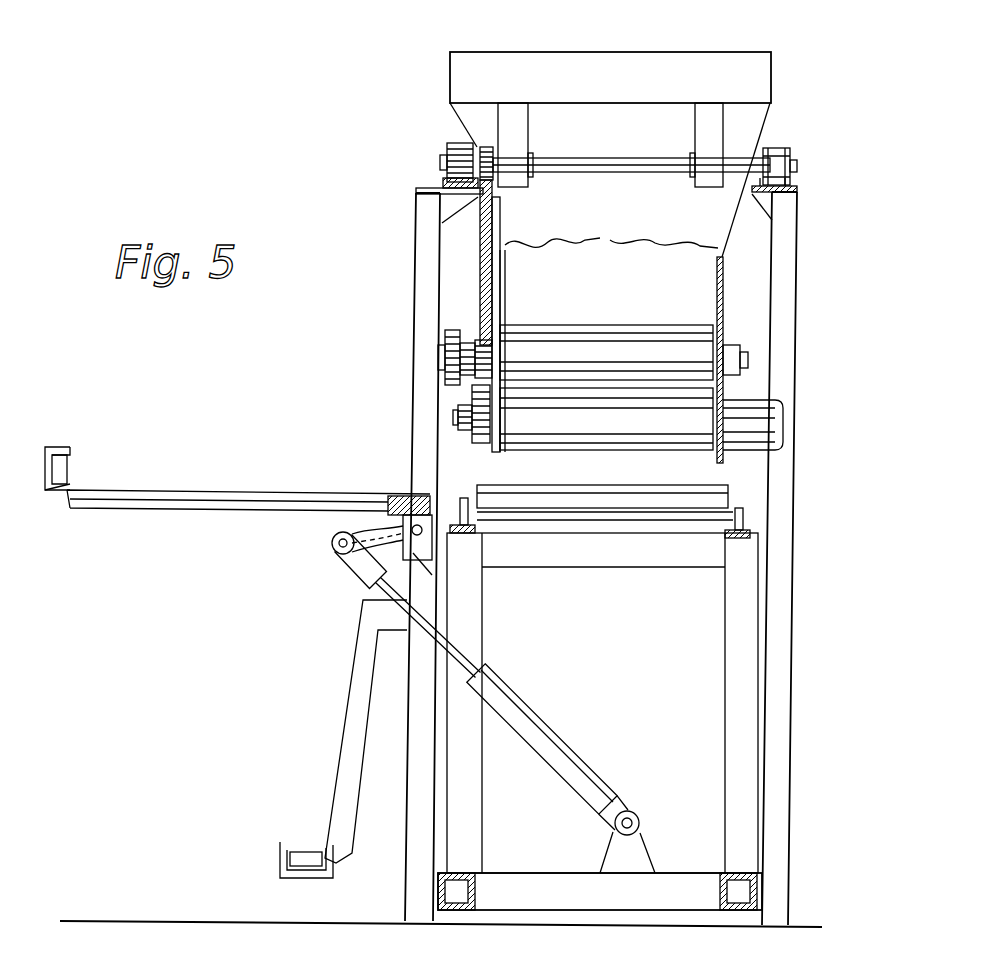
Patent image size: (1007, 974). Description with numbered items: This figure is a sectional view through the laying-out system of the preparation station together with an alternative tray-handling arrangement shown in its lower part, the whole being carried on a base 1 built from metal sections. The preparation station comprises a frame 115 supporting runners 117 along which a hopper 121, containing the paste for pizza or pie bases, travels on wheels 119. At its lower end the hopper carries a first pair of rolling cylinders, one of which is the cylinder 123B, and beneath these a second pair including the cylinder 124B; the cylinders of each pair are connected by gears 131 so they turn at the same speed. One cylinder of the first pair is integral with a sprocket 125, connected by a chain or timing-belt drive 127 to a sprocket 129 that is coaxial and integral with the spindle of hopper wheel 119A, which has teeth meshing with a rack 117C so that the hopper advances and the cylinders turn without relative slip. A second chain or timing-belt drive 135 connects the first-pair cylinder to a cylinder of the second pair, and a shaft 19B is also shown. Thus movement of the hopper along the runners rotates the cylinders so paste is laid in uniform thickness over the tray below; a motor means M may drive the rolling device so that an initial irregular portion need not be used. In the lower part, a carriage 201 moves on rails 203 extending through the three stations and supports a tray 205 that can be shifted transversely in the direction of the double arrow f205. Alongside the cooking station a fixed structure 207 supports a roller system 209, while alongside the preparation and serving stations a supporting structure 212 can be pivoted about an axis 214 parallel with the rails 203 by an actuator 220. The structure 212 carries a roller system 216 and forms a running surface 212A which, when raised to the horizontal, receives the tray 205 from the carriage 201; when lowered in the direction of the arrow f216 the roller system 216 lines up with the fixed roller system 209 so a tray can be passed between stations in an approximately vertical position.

The base 1 is at (720, 718).
The shaft 19B is at (668, 143).
The frame 115 is at (803, 272).
The runners 117 is at (790, 187).
The rack 117C is at (448, 186).
The wheels 119 is at (778, 155).
The hopper wheel 119A is at (455, 150).
The hopper 121 is at (626, 279).
The rolling cylinder of the first pair 123B is at (683, 352).
The rolling cylinder of the second pair 124B is at (673, 437).
The sprocket 125 is at (512, 348).
The chain or timing-belt drive 127 is at (496, 206).
The sprocket 129 is at (485, 147).
The gears 131 is at (447, 350).
The second chain or timing-belt drive 135 is at (463, 405).
The motor means M is at (783, 412).
The carriage 201 is at (630, 546).
The rails 203 is at (456, 514).
The tray 205 is at (735, 490).
The fixed structure 207 is at (343, 806).
The roller system 209 is at (304, 846).
The supporting structure 212 is at (213, 514).
The running surface 212A is at (246, 489).
The axis 214 is at (345, 530).
The roller system 216 is at (66, 455).
The actuators 220 is at (545, 730).
The double arrow f205 is at (380, 468).
The arrow f216 is at (52, 512).